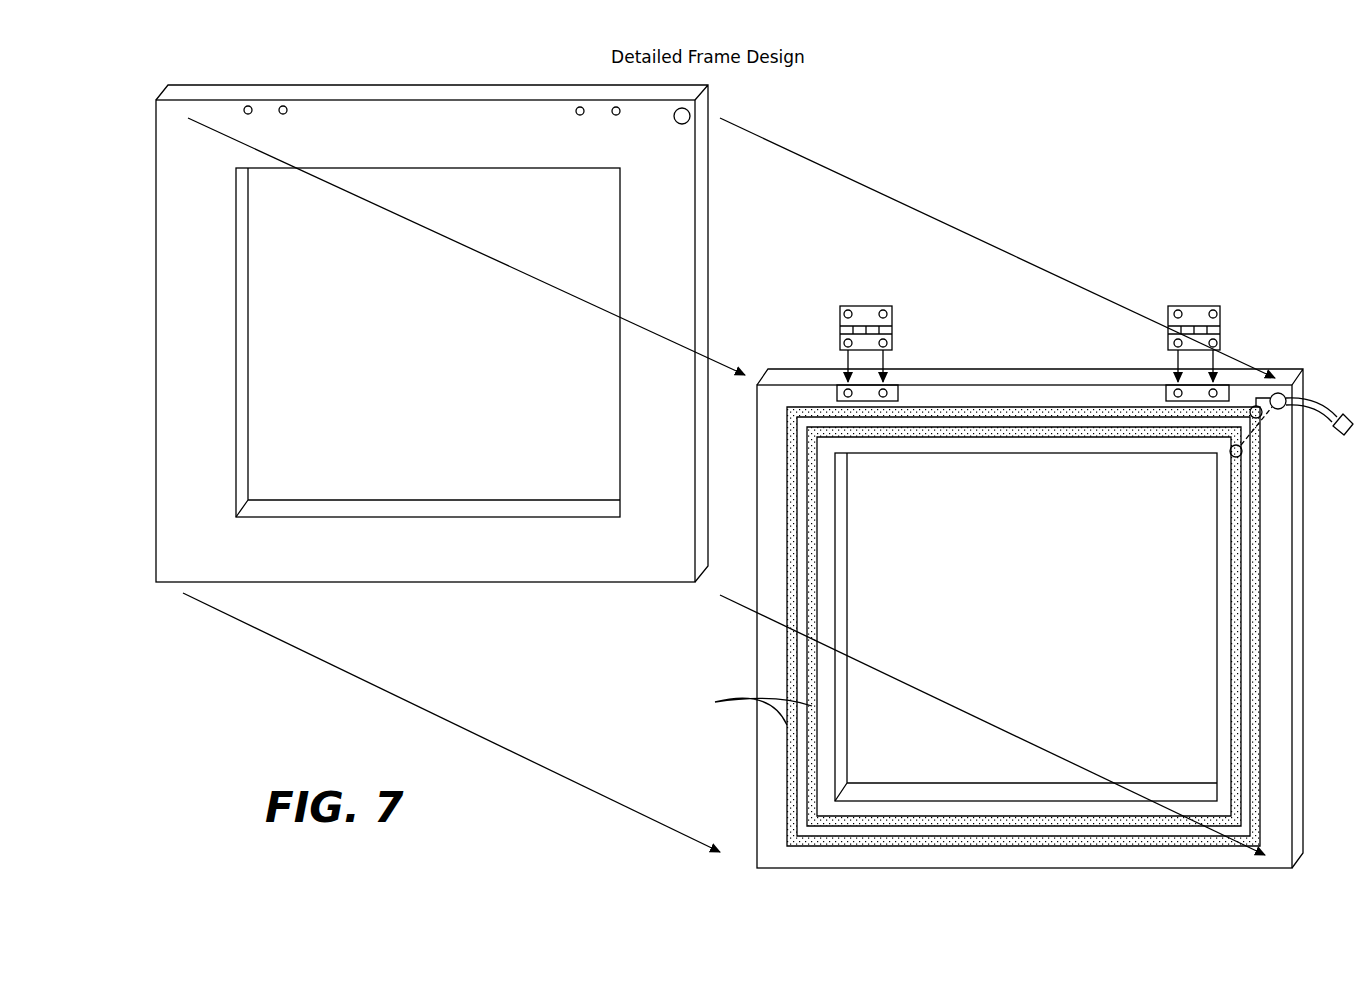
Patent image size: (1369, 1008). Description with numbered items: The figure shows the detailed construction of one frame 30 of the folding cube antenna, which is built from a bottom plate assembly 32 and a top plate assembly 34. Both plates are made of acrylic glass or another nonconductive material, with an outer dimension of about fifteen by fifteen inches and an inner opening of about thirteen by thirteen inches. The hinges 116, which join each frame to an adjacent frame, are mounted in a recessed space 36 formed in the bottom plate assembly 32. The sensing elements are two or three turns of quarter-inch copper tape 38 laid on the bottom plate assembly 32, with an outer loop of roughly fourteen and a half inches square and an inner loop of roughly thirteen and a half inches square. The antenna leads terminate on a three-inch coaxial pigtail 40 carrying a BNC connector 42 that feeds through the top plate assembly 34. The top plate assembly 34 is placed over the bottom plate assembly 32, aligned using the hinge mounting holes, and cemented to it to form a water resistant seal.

The frame 30 is at (930, 176).
The bottom plate assembly 32 is at (1285, 595).
The top plate assembly 34 is at (432, 333).
The recessed space 36 is at (897, 390).
The copper tape 38 is at (810, 790).
The coaxial pigtail 40 is at (1326, 414).
The BNC connector 42 is at (1347, 411).
The hinge 116 is at (892, 322).